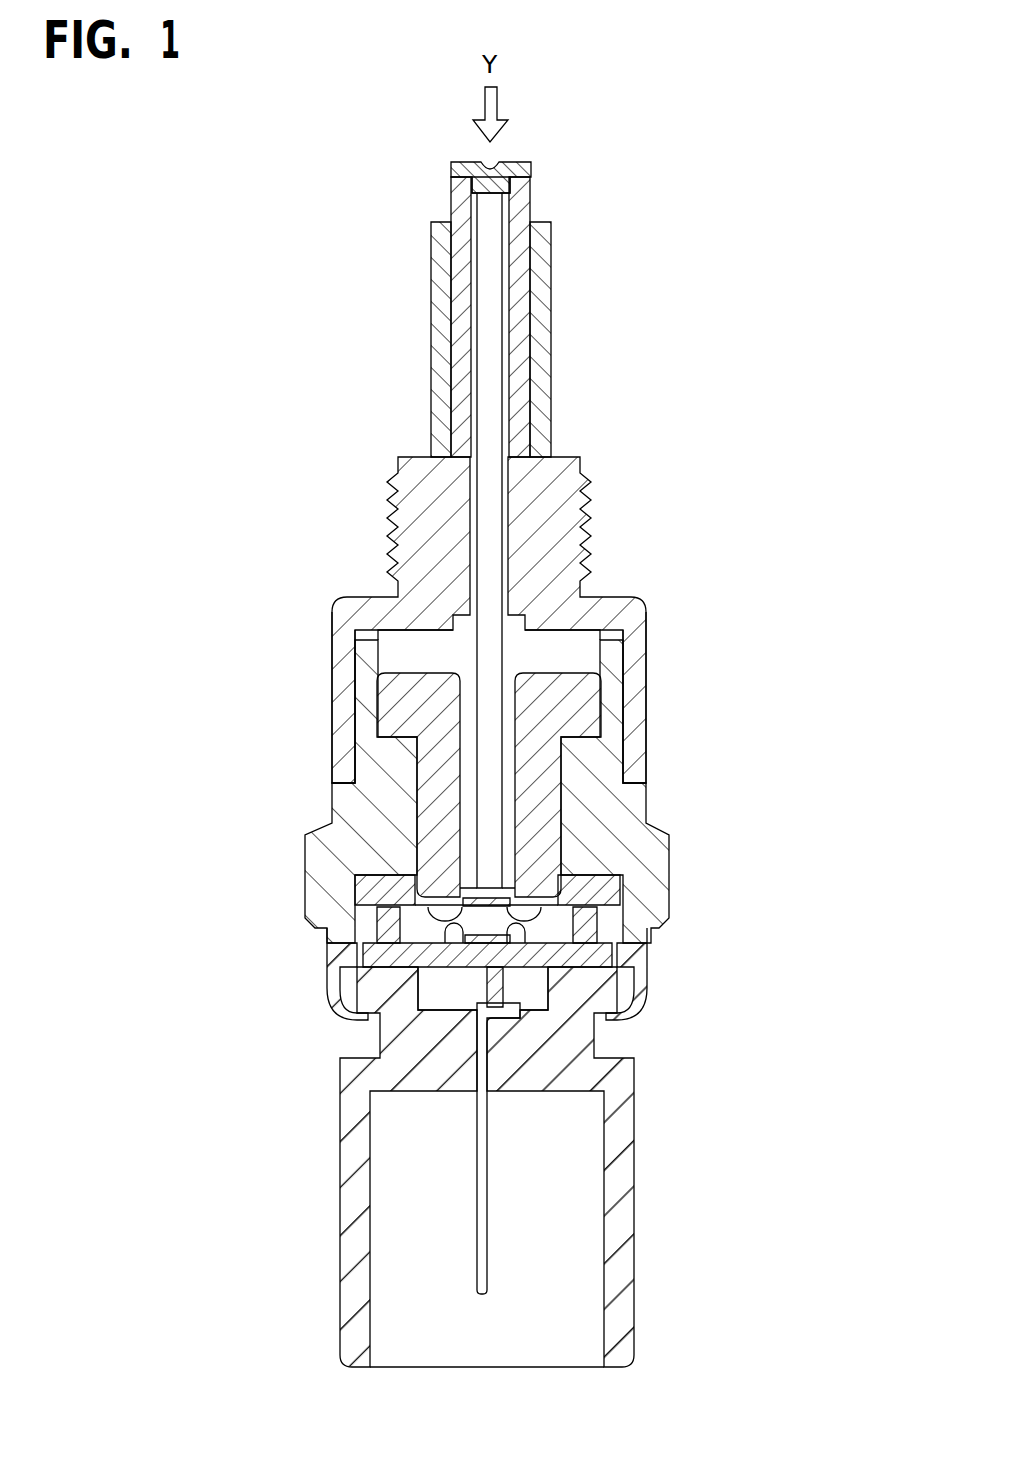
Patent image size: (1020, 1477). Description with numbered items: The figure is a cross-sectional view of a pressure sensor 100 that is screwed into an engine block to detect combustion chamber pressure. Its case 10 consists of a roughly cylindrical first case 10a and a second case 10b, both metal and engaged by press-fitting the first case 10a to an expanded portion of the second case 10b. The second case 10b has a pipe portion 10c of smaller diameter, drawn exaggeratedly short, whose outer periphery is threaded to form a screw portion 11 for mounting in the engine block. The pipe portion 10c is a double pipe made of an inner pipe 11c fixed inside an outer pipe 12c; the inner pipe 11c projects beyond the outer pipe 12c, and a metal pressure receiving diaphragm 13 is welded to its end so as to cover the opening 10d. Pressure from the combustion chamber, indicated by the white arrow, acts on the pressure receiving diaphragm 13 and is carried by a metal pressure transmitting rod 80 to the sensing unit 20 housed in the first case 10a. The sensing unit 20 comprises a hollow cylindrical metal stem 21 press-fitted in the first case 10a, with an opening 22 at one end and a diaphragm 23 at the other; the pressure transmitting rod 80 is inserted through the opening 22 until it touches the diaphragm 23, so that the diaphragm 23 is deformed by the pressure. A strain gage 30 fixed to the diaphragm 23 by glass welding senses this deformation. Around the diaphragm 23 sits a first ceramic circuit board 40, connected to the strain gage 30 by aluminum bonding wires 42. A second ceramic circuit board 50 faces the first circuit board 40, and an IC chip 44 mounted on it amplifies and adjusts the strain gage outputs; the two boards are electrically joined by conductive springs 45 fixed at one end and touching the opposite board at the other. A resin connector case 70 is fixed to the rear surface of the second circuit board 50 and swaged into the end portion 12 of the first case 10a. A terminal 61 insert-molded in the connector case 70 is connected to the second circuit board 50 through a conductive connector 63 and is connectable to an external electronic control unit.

The pressure sensor 100 is at (381, 161).
The pressure receiving diaphragm 13 is at (531, 170).
The opening 10d is at (512, 186).
The pipe portion 10c is at (406, 317).
The inner pipe 11c is at (458, 255).
The outer pipe 12c is at (440, 300).
The screw portion 11 is at (396, 513).
The pressure transmitting rod 80 is at (495, 530).
The opening 22 is at (462, 665).
The second case 10b is at (625, 663).
The case 10 is at (542, 560).
The first case 10a is at (632, 792).
The metal stem 21 is at (435, 755).
The sensing unit 20 is at (399, 767).
The diaphragm 23 is at (420, 874).
The first circuit board 40 is at (560, 878).
The bonding wires 42 is at (385, 910).
The strain gage 30 is at (514, 904).
The springs 45 is at (432, 920).
The second circuit board 50 is at (603, 958).
The conductive connector 63 is at (512, 983).
The end portion 12 is at (347, 1019).
The IC chip 44 is at (460, 958).
The connector case 70 is at (617, 1186).
The terminal 61 is at (484, 1232).